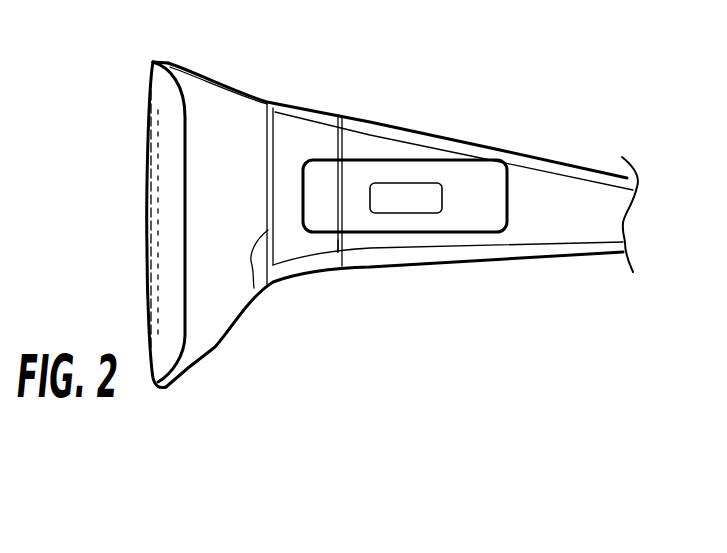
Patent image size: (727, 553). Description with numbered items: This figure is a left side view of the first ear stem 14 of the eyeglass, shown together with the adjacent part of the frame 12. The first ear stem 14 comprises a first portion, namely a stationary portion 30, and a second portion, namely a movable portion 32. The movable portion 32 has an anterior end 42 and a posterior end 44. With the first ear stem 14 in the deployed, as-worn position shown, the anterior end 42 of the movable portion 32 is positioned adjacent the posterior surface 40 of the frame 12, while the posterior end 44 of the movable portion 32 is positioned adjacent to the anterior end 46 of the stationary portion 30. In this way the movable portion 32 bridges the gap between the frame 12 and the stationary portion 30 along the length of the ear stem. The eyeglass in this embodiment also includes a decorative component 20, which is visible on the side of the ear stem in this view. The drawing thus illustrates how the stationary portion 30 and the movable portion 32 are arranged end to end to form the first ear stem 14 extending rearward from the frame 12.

The frame 12 is at (240, 310).
The first ear stem 14 is at (378, 111).
The decorative component 20 is at (482, 193).
The stationary portion 30 is at (520, 258).
The movable portion 32 is at (295, 273).
The posterior surface 40 is at (270, 167).
The anterior end 42 is at (263, 287).
The posterior end 44 is at (340, 247).
The anterior end 46 is at (343, 140).